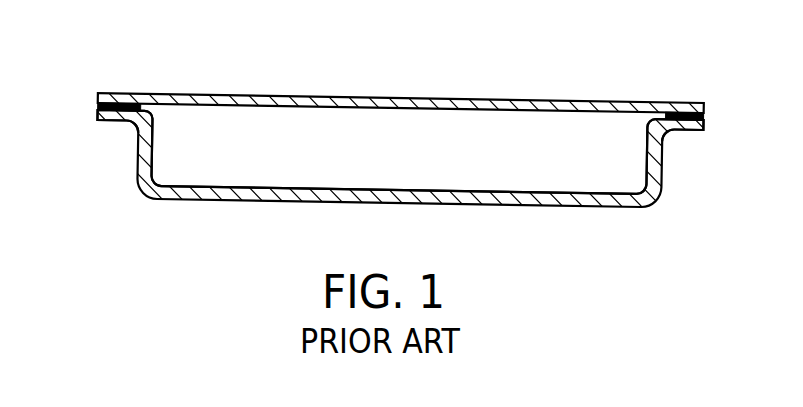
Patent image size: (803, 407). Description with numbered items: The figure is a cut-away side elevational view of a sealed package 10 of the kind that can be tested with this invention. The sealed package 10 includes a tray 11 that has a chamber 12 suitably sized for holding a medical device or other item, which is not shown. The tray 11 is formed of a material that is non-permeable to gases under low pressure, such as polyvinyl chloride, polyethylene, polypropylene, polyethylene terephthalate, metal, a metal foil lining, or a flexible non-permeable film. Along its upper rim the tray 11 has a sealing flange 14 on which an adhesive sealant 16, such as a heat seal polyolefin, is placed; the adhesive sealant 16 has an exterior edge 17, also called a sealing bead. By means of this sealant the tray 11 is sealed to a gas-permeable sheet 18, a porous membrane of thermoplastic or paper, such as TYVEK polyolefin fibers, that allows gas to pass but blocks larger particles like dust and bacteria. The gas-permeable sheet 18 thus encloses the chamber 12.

The sealed package 10 is at (622, 80).
The tray 11 is at (565, 207).
The chamber 12 is at (415, 163).
The sealing flange 14 is at (118, 122).
The adhesive sealant 16 is at (655, 116).
The exterior edge 17 is at (97, 105).
The gas-permeable sheet 18 is at (261, 94).